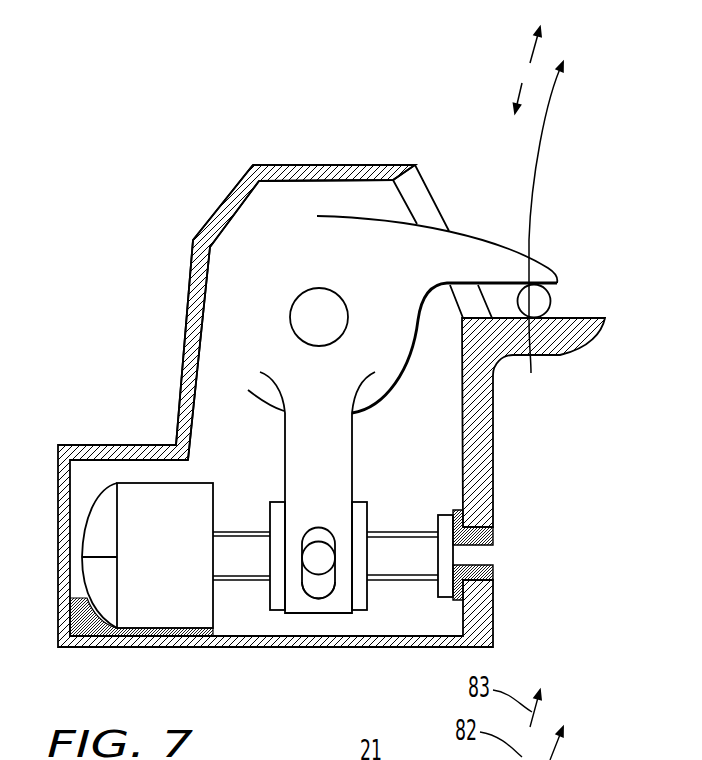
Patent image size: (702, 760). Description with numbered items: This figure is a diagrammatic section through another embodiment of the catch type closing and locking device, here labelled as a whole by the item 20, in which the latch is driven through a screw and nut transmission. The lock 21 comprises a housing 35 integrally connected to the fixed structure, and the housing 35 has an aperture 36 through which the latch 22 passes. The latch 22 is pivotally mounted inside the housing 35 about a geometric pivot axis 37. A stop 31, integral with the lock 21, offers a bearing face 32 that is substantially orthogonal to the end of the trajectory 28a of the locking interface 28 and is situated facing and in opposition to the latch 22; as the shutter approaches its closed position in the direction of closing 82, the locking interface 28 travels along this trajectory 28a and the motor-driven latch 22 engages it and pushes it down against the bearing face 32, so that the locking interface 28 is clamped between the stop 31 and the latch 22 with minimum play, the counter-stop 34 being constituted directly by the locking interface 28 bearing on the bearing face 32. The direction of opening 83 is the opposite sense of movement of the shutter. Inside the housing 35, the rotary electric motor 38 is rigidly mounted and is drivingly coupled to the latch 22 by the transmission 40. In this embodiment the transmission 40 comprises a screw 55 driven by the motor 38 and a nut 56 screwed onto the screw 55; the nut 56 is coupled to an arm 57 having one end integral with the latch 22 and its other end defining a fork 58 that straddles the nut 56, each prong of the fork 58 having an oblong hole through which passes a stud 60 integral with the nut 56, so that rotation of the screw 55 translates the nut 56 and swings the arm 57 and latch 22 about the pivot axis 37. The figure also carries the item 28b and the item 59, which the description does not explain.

The housing assembly 20 is at (167, 220).
The lock 21 is at (373, 160).
The latch 22 is at (453, 252).
The locking interface 28 is at (579, 237).
The trajectory 28a is at (542, 137).
The cable lower portion 28b is at (521, 351).
The stop 31 is at (560, 338).
The bearing face 32 is at (580, 318).
The counter-stop 34 is at (542, 300).
The housing 35 is at (235, 203).
The aperture 36 is at (440, 183).
The geometric pivot axis 37 is at (317, 317).
The rotary electric motor 38 is at (168, 610).
The transmission 40 is at (398, 510).
The screw 55 is at (407, 560).
The nut 56 is at (362, 600).
The arm 57 is at (300, 432).
The fork 58 is at (306, 509).
The slot 59 is at (330, 590).
The stud 60 is at (312, 570).
The direction of closing 82 is at (521, 89).
The direction of opening 83 is at (532, 49).